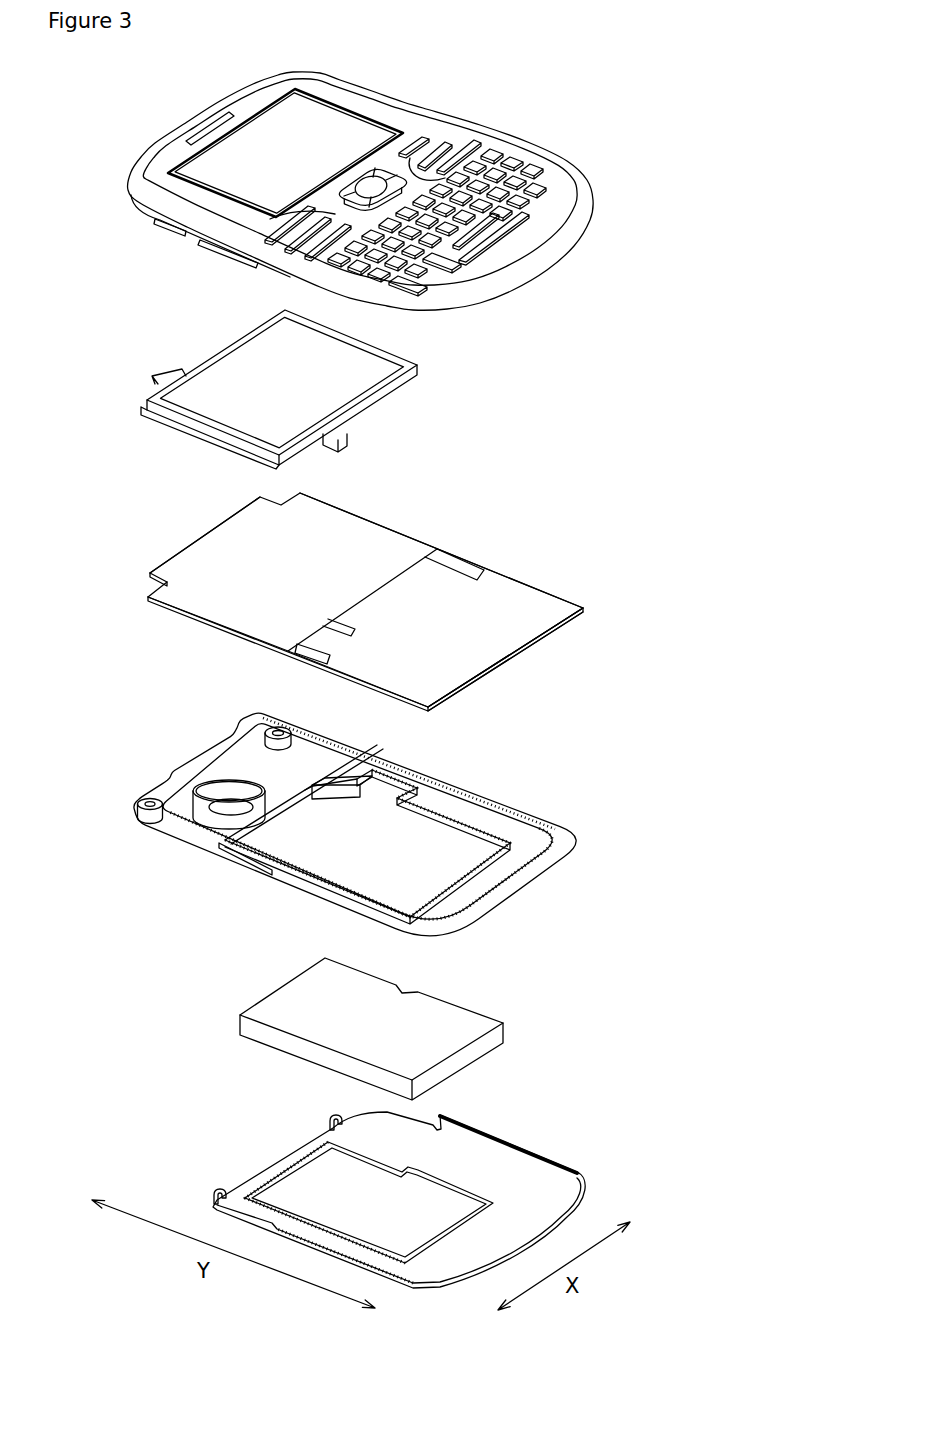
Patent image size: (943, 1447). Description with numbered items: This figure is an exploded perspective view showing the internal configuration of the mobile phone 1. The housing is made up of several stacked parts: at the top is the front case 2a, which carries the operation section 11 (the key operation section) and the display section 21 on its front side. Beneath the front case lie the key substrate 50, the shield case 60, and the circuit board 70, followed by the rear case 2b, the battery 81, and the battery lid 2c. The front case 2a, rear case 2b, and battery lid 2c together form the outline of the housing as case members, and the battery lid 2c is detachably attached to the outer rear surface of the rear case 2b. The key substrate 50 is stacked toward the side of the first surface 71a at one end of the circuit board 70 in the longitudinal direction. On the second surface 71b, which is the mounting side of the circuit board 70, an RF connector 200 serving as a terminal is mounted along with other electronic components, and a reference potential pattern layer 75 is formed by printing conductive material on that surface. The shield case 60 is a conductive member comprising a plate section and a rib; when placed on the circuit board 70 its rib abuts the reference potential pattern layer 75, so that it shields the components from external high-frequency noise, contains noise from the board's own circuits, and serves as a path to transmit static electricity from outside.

The mobile phone 1 is at (417, 189).
The front case 2a is at (367, 189).
The operation section 11 is at (558, 180).
The display section 21 is at (422, 366).
The circuit board 70 is at (374, 594).
The first surface 71a is at (197, 602).
The second surface 71b is at (217, 628).
The key substrate 50 is at (459, 602).
The RF connector 200 is at (540, 643).
The reference potential pattern layer 75 is at (527, 654).
The rear case 2b is at (377, 824).
The shield case 60 is at (530, 858).
The battery 81 is at (473, 1018).
The battery lid 2c is at (548, 1156).